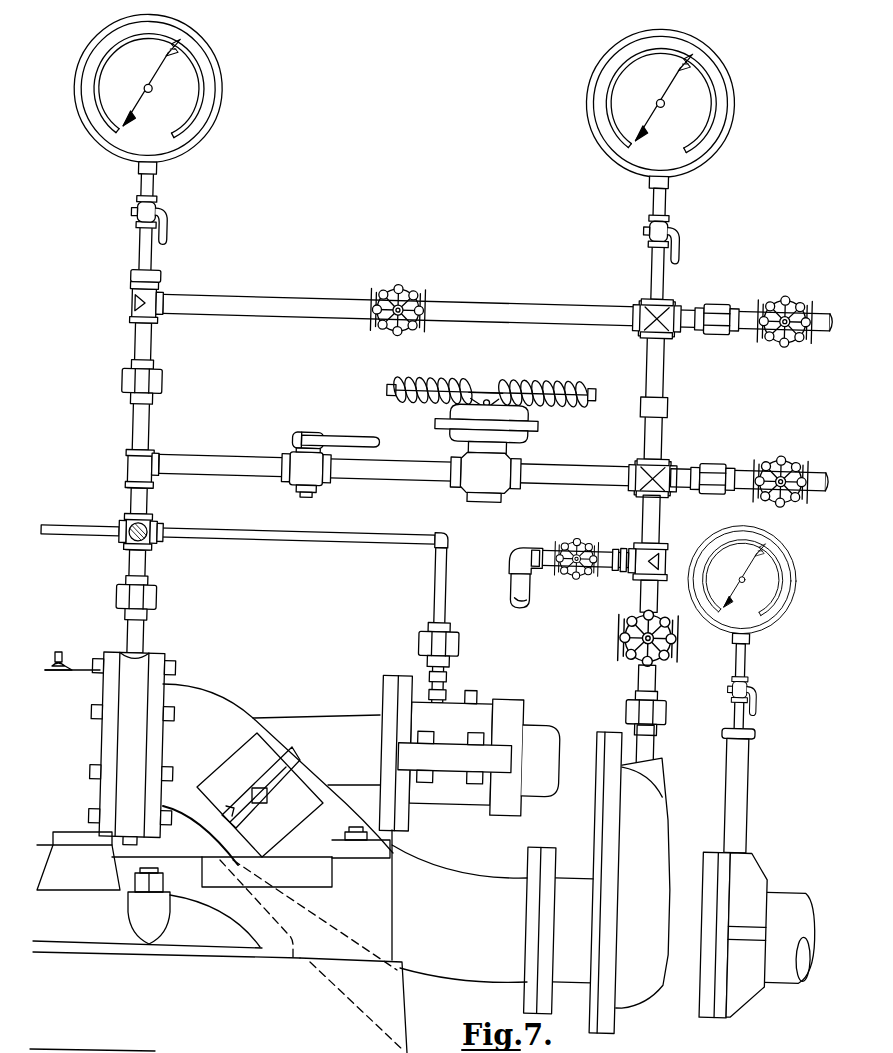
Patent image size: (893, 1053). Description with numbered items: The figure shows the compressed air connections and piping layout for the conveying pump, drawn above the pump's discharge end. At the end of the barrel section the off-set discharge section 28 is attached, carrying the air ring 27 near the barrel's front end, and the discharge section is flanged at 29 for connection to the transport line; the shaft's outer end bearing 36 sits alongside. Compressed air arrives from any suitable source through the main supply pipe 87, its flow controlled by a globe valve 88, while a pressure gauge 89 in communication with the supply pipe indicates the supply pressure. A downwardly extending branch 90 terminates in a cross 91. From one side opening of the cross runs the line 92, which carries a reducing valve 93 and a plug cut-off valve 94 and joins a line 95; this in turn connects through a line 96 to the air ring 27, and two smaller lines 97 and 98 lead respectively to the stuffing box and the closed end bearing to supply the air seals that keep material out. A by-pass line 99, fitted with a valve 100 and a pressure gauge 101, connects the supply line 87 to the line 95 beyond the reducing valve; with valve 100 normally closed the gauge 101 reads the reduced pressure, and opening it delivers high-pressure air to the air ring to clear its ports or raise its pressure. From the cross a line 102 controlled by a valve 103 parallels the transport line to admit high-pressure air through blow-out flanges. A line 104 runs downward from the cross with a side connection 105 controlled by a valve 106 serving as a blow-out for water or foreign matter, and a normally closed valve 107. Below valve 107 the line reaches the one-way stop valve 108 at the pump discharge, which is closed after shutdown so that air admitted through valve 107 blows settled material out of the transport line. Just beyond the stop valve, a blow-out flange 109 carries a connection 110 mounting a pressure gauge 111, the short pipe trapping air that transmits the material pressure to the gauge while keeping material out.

The air ring 27 is at (146, 680).
The off-set discharge section 28 is at (207, 700).
The flange 29 is at (536, 854).
The bearing 36 is at (514, 700).
The main supply pipe 87 is at (742, 308).
The globe valve 88 is at (815, 305).
The pressure gauge 89 is at (670, 162).
The downwardly extending branch 90 is at (660, 355).
The cross 91 is at (700, 458).
The line 92 is at (614, 465).
The reducing valve 93 is at (488, 470).
The plug cut-off valve 94 is at (310, 478).
The line 95 is at (146, 497).
The line 96 is at (148, 566).
The smaller line 97 is at (110, 550).
The smaller line 98 is at (272, 552).
The by-pass line 99 is at (280, 303).
The valve 100 is at (422, 292).
The pressure gauge 101 is at (154, 153).
The line 102 is at (745, 460).
The valve 103 is at (808, 436).
The line 104 is at (660, 515).
The side connection 105 is at (552, 540).
The valve 106 is at (608, 540).
The valve 107 is at (698, 636).
The stop valve 108 is at (640, 1002).
The blow-out flange 109 is at (748, 882).
The connection 110 is at (750, 772).
The pressure gauge 111 is at (752, 608).